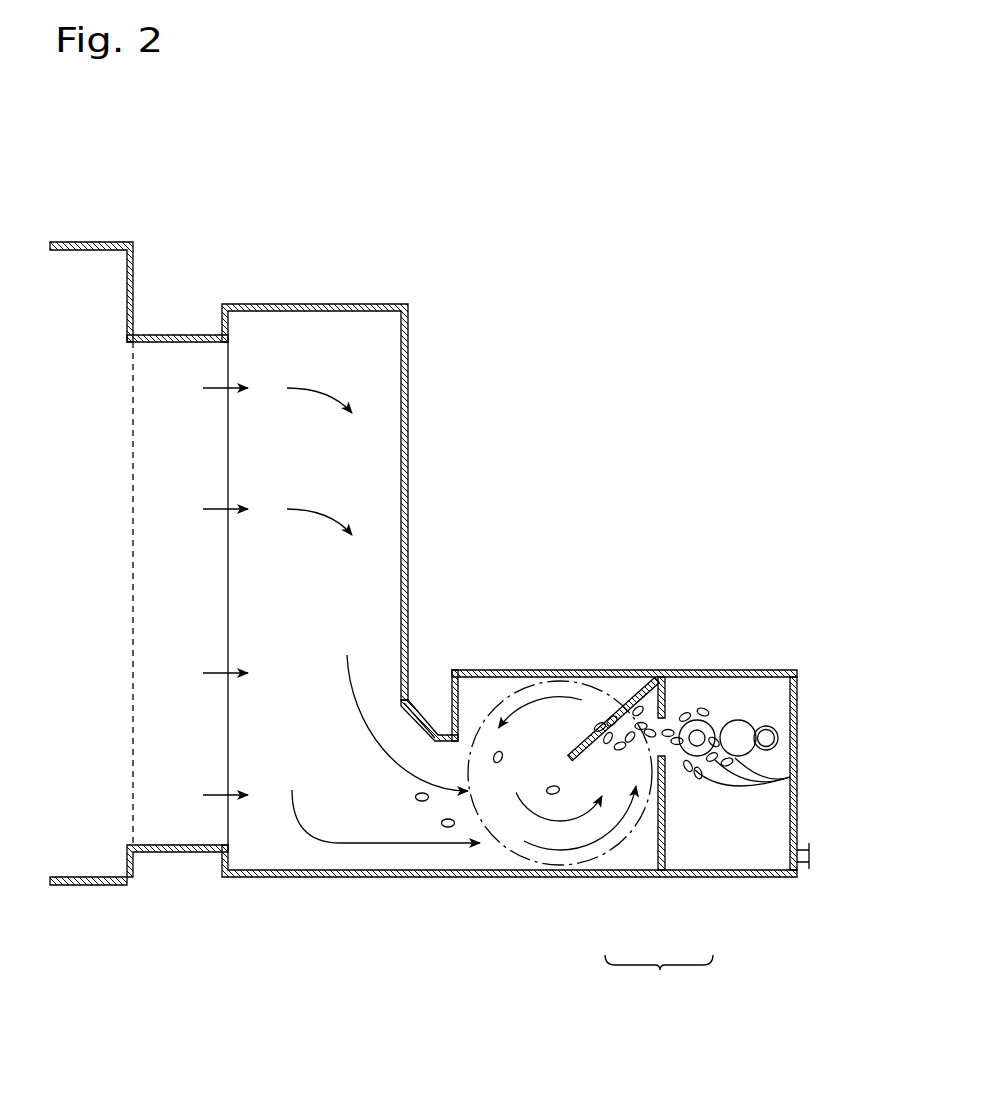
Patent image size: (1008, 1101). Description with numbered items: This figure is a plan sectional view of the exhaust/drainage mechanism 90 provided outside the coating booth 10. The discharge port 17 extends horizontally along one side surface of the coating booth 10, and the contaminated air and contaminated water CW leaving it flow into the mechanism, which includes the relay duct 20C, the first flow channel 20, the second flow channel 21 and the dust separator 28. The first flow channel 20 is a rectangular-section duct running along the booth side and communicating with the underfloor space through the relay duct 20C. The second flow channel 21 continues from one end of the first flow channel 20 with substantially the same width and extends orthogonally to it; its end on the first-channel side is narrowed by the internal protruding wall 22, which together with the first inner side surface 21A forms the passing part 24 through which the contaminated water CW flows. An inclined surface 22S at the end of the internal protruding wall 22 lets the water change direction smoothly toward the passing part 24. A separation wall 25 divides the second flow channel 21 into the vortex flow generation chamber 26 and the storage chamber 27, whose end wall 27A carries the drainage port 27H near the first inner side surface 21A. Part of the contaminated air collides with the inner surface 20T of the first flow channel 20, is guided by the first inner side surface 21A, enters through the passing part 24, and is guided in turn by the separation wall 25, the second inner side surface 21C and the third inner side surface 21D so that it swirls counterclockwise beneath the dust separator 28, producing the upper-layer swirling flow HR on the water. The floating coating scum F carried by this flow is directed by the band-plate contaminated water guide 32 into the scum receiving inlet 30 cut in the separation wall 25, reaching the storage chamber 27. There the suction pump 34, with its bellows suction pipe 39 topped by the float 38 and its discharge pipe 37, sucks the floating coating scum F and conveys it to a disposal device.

The coating booth 10 is at (89, 242).
The discharge port 17 is at (133, 843).
The first flow channel 20 is at (281, 304).
The relay duct 20C is at (180, 335).
The inner surface 20T is at (313, 878).
The second flow channel 21 is at (659, 979).
The first inner side surface 21A is at (532, 878).
The second inner side surface 21C is at (590, 670).
The third inner side surface 21D is at (461, 707).
The internal protruding wall 22 is at (437, 735).
The inclined surface 22S is at (402, 703).
The passing part 24 is at (472, 822).
The separation wall 25 is at (662, 697).
The vortex flow generation chamber 26 is at (627, 862).
The storage chamber 27 is at (695, 855).
The end wall 27A is at (797, 748).
The drainage port 27H is at (814, 858).
The dust separator 28 is at (522, 688).
The scum receiving inlet 30 is at (690, 707).
The contaminated water guide 32 is at (606, 714).
The suction pump 34 is at (740, 728).
The discharge pipe 37 is at (777, 726).
The float 38 is at (714, 726).
The suction pipe 39 is at (706, 726).
The exhaust/drainage mechanism 90 is at (592, 418).
The contaminated water CW is at (396, 845).
The upper-layer swirling flow HR is at (577, 850).
The floating coating scum F is at (790, 777).